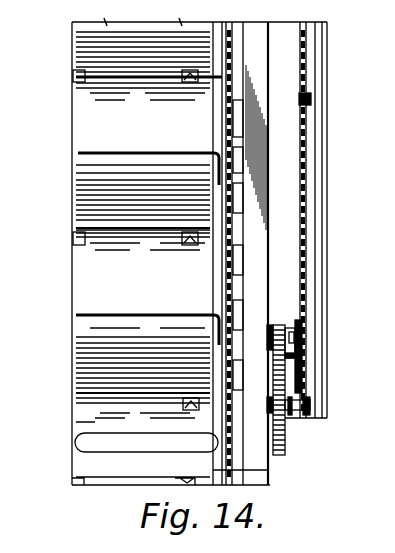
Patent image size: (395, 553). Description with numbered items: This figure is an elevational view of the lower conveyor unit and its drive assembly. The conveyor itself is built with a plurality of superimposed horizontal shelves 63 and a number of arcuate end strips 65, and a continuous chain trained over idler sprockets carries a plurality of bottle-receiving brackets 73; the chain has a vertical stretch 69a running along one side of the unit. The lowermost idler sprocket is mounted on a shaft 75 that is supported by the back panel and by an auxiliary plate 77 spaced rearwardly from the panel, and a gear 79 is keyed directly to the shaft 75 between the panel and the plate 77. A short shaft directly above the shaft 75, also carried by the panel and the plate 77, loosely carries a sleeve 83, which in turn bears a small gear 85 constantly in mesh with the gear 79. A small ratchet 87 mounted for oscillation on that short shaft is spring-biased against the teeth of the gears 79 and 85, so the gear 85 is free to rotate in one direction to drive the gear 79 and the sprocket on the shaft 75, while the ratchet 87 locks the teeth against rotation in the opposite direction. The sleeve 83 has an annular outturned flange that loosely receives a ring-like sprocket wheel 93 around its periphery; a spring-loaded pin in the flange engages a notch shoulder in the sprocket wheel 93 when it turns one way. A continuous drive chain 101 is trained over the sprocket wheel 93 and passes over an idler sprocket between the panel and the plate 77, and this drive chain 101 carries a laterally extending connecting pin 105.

The arcuate end strip 65 is at (85, 130).
The horizontal shelf 63 is at (116, 243).
The vertical stretch of conveyor chain 69a is at (226, 272).
The bottle-receiving bracket 73 is at (103, 447).
The connecting pin 105 is at (306, 98).
The drive chain 101 is at (312, 220).
The small gear 85 is at (282, 325).
The sleeve 83 is at (290, 332).
The sprocket wheel 93 is at (292, 340).
The ratchet 87 is at (275, 345).
The auxiliary plate 77 is at (313, 390).
The shaft 75 is at (296, 418).
The gear 79 is at (279, 455).